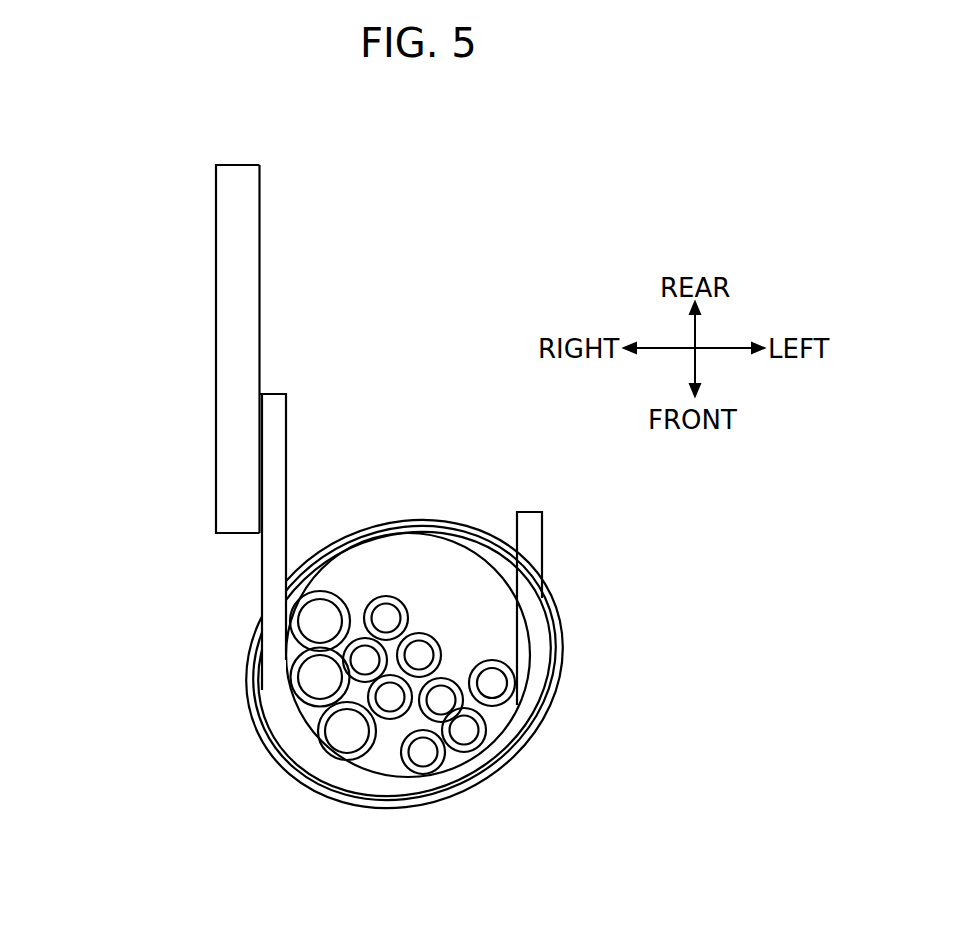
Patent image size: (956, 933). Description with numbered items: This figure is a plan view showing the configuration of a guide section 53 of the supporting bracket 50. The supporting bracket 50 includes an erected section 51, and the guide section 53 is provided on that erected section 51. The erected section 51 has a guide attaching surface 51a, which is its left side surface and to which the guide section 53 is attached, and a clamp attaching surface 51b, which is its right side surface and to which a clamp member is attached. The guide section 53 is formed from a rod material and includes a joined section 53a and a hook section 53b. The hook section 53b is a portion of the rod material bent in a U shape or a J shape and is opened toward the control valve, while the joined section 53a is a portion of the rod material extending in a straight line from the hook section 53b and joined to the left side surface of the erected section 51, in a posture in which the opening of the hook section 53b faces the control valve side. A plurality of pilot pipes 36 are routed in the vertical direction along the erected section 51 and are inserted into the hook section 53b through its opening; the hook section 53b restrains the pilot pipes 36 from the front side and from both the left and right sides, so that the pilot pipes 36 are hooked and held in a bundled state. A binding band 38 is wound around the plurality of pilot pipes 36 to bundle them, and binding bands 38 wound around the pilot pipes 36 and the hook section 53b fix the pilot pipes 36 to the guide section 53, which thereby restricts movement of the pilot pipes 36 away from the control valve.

The pilot pipe 36 is at (318, 733).
The binding band 38 is at (428, 520).
The supporting bracket 50 is at (295, 435).
The erected section 51 is at (241, 349).
The guide attaching surface 51a is at (260, 281).
The clamp attaching surface 51b is at (216, 313).
The guide section 53 is at (173, 542).
The joined section 53a is at (268, 424).
The hook section 53b is at (260, 575).